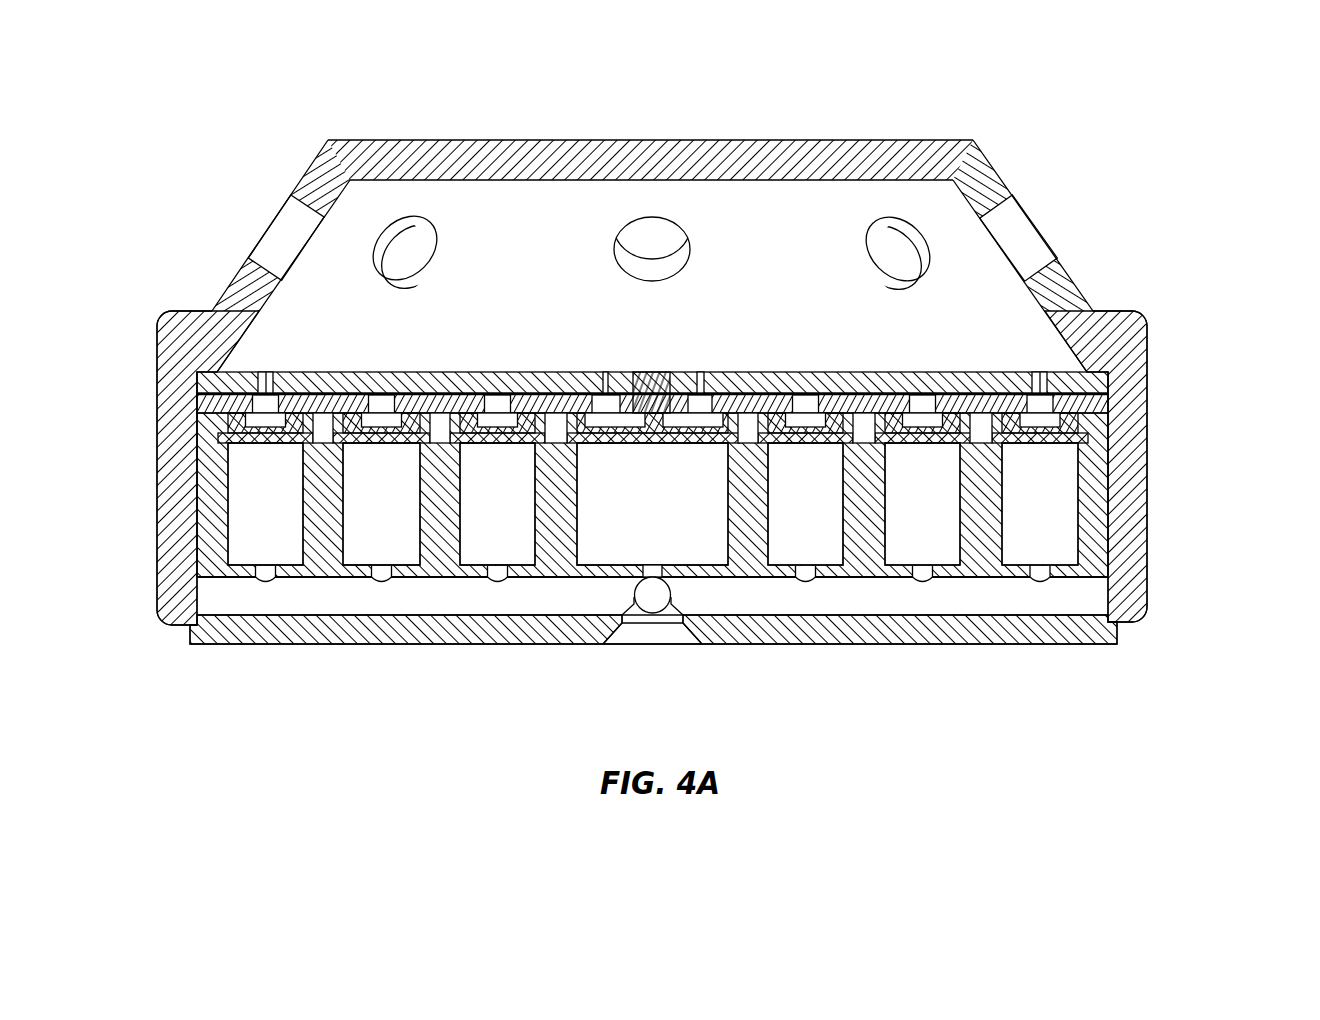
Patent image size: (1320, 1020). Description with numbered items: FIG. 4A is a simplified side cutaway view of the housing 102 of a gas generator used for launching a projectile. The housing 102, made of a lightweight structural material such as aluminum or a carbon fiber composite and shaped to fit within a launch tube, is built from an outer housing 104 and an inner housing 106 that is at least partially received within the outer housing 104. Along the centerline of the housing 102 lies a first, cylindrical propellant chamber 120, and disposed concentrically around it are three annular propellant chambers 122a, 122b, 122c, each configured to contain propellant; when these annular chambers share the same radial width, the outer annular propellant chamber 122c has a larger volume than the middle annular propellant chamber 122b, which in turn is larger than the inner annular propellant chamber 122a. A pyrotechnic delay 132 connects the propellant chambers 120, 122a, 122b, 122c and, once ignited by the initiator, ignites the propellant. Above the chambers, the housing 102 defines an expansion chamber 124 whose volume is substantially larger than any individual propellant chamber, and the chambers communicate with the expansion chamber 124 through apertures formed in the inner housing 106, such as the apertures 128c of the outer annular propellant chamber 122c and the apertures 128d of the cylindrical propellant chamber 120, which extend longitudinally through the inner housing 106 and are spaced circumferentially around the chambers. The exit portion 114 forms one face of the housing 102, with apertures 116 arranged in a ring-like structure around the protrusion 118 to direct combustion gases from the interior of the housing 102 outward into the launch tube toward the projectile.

The housing 102 is at (728, 504).
The outer housing 104 is at (1137, 595).
The inner housing 106 is at (1083, 638).
The exit portion 114 is at (661, 214).
The apertures 116 is at (1017, 232).
The protrusion 118 is at (707, 140).
The cylindrical propellant chamber 120 is at (712, 553).
The inner annular propellant chamber 122a is at (785, 555).
The middle annular propellant chamber 122b is at (902, 555).
The outer annular propellant chamber 122c is at (1017, 555).
The expansion chamber 124 is at (515, 255).
The apertures of the outer annular propellant chamber 128c is at (1038, 378).
The apertures of the cylindrical propellant chamber 128d is at (700, 375).
The pyrotechnic delay 132 is at (447, 597).